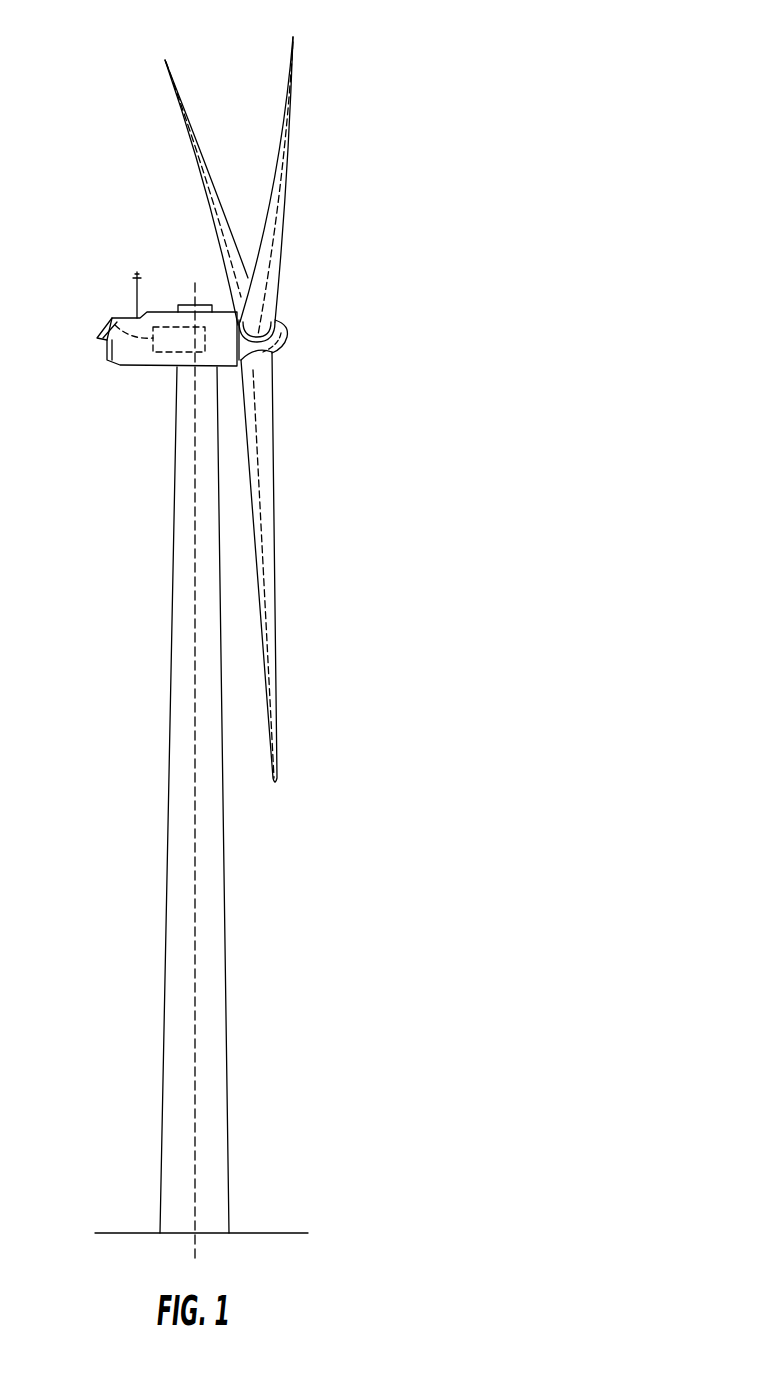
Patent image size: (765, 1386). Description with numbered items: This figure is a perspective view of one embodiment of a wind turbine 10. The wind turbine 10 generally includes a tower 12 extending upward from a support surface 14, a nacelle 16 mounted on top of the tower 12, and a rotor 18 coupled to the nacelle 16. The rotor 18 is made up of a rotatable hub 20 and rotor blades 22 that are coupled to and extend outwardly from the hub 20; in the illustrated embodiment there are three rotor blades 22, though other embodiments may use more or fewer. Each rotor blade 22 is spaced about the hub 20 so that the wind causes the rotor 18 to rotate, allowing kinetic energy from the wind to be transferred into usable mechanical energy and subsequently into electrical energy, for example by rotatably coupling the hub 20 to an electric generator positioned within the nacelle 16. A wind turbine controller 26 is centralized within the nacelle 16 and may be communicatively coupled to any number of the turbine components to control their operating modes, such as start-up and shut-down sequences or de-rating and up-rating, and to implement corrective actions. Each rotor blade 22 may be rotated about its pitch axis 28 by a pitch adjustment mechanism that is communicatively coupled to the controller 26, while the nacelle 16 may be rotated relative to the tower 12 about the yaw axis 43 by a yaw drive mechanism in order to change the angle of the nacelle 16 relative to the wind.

The wind turbine 10 is at (408, 162).
The tower 12 is at (207, 872).
The support surface 14 is at (138, 1233).
The nacelle 16 is at (148, 366).
The rotor 18 is at (294, 306).
The rotatable hub 20 is at (284, 333).
The rotor blade 22 is at (192, 135).
The wind turbine controller 26 is at (112, 317).
The pitch axis 28 is at (203, 205).
The yaw axis 43 is at (197, 485).